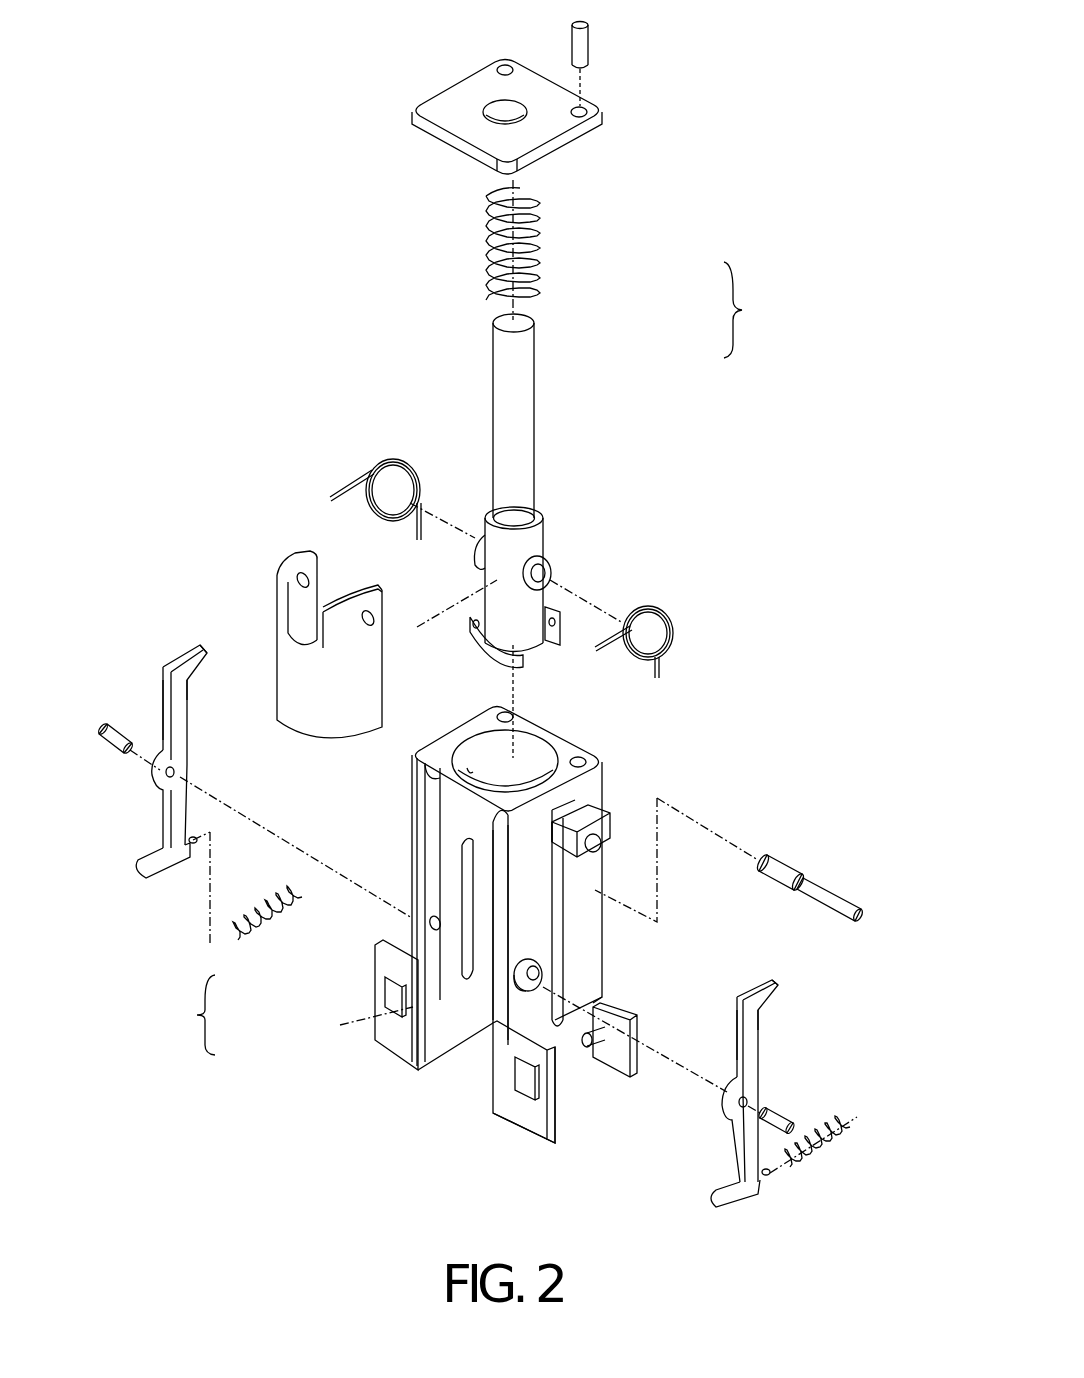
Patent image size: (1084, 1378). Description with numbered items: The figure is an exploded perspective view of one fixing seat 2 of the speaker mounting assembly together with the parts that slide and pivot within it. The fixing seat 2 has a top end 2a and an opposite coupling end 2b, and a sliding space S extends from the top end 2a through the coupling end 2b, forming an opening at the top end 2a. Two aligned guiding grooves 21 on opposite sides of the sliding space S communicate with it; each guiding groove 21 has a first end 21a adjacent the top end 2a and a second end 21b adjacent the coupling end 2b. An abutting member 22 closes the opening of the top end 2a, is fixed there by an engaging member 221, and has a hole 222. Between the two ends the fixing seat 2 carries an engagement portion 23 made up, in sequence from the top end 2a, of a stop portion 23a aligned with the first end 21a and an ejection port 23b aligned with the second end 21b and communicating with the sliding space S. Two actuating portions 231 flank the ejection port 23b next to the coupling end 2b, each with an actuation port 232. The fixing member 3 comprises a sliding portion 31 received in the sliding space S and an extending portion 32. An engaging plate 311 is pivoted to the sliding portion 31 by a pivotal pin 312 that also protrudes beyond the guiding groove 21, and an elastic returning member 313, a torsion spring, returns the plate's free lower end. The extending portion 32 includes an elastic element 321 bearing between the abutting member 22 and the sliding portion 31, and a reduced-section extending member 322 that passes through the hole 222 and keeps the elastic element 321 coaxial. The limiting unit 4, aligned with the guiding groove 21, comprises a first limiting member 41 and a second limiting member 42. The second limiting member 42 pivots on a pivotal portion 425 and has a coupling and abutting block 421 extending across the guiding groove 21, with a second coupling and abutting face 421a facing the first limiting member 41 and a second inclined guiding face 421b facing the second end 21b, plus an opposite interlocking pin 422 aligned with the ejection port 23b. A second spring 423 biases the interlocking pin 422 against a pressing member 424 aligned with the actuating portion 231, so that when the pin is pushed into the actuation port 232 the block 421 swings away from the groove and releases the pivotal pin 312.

The fixing seat 2 is at (342, 1140).
The top end 2a is at (565, 748).
The coupling end 2b is at (393, 1060).
The guiding groove 21 is at (557, 917).
The first end 21a is at (565, 812).
The second end 21b is at (600, 1003).
The abutting member 22 is at (440, 108).
The engaging member 221 is at (598, 36).
The hole 222 is at (487, 108).
The engagement portion 23 is at (316, 946).
The stop portion 23a is at (455, 860).
The ejection port 23b is at (440, 1013).
The actuating portion 231 is at (557, 1100).
The actuation port 232 is at (518, 1078).
The fixing member 3 is at (607, 440).
The sliding portion 31 is at (540, 543).
The engaging plate 311 is at (330, 710).
The pivotal pin 312 is at (783, 866).
The elastic returning member 313 is at (397, 460).
The extending portion 32 is at (629, 349).
The elastic element 321 is at (535, 268).
The extending member 322 is at (523, 390).
The limiting unit 4 is at (158, 570).
The first limiting member 41 is at (612, 820).
The second limiting member 42 is at (168, 715).
The coupling and abutting block 421 is at (190, 668).
The second coupling and abutting face 421a is at (197, 650).
The second inclined guiding face 421b is at (195, 672).
The interlocking pin 422 is at (142, 860).
The second spring 423 is at (250, 892).
The pressing member 424 is at (618, 1055).
The pivotal portion 425 is at (166, 770).
The sliding space S is at (480, 1023).